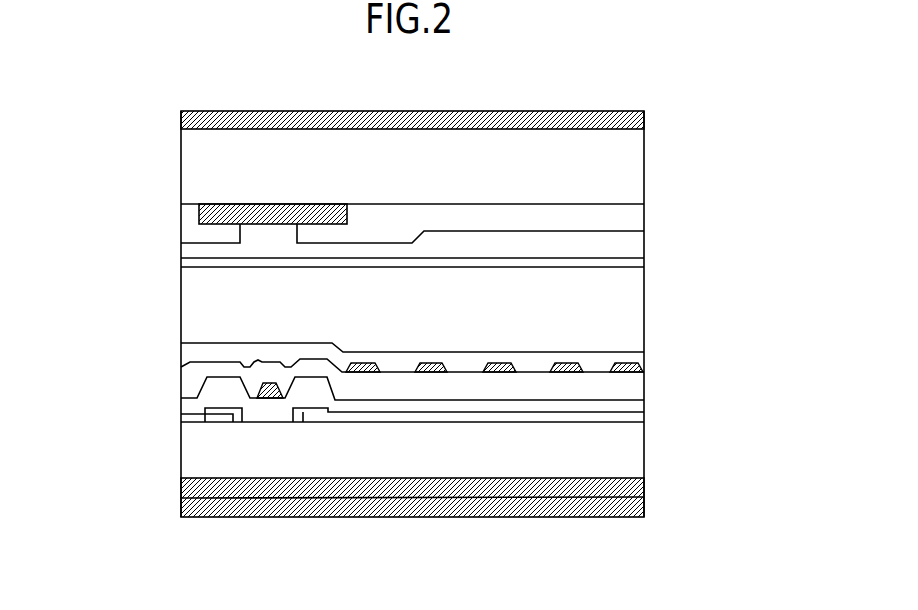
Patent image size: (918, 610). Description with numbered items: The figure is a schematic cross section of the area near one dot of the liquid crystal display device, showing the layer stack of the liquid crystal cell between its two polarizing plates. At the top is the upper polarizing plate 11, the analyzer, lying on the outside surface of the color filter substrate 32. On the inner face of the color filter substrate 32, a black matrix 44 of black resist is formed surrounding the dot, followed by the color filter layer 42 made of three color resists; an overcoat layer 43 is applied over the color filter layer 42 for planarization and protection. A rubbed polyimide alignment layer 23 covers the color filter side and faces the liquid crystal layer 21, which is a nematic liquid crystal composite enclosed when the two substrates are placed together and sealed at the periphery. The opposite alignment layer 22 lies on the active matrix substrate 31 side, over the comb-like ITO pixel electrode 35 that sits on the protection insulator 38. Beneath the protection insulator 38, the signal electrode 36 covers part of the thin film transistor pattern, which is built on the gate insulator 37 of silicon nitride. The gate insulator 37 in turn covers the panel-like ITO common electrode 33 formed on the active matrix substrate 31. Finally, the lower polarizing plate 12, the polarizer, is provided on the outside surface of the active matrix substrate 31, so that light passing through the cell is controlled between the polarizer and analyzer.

The upper polarizing plate 11 is at (643, 111).
The color filter substrate 32 is at (617, 167).
The black matrix 44 is at (220, 206).
The color filter layer 42 is at (617, 215).
The overcoat layer 43 is at (617, 241).
The alignment layer 23 is at (203, 264).
The liquid crystal layer 21 is at (617, 306).
The alignment layer 22 is at (200, 355).
The pixel electrode 35 is at (640, 363).
The protection insulator 38 is at (618, 380).
The signal electrode 36 is at (257, 392).
The gate insulator 37 is at (622, 406).
The common electrode 33 is at (607, 417).
The active matrix substrate 31 is at (217, 447).
The lower polarizing plate 12 is at (175, 482).